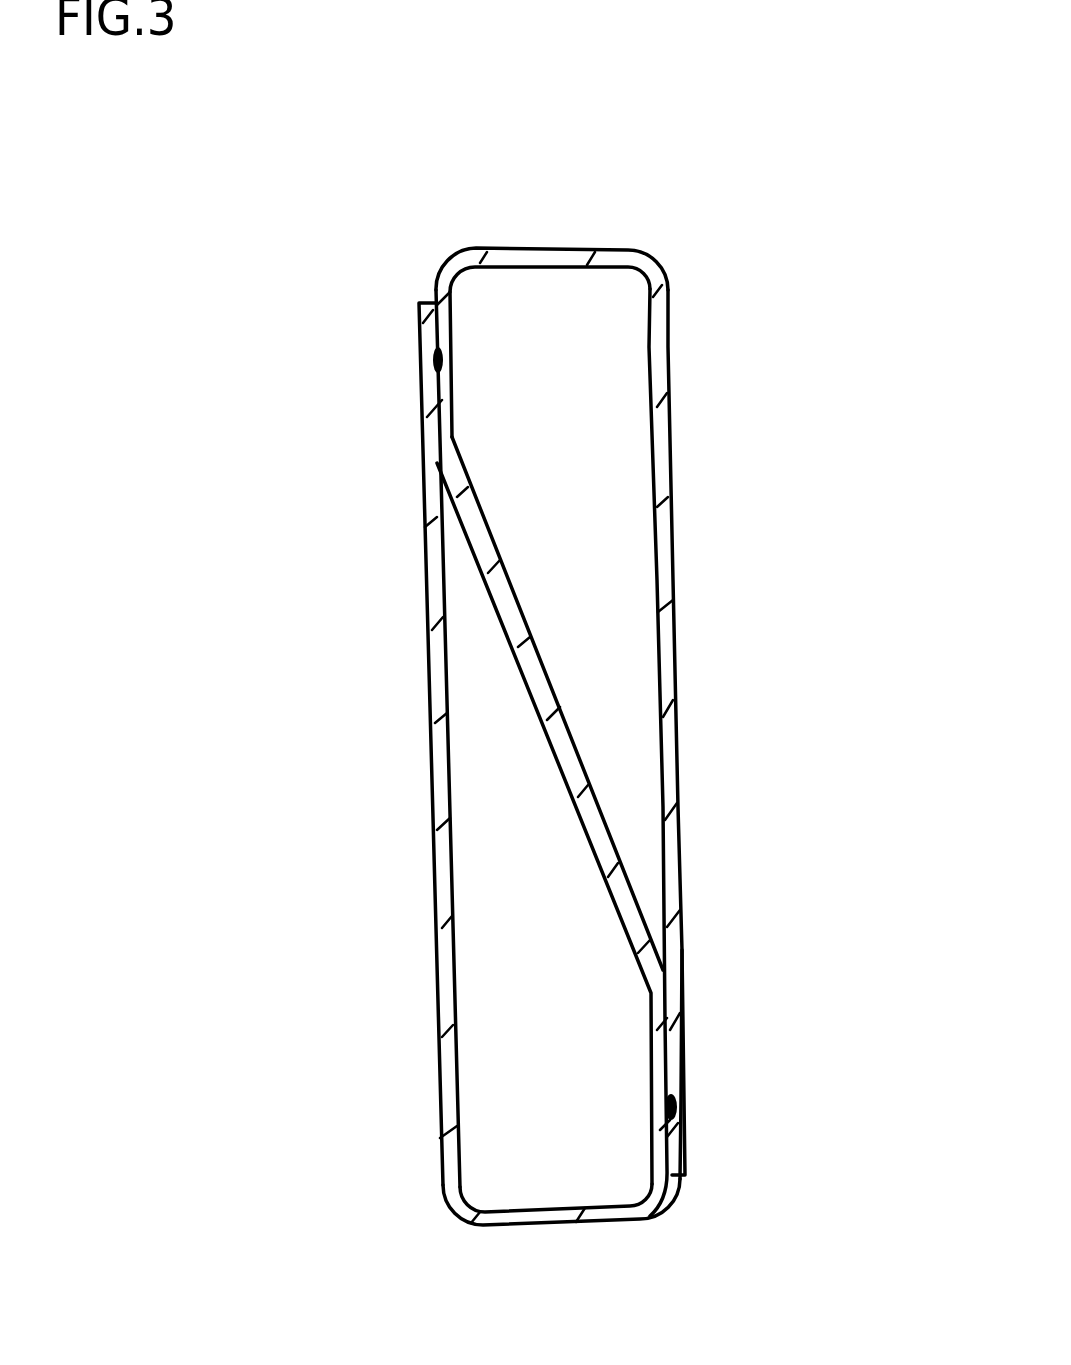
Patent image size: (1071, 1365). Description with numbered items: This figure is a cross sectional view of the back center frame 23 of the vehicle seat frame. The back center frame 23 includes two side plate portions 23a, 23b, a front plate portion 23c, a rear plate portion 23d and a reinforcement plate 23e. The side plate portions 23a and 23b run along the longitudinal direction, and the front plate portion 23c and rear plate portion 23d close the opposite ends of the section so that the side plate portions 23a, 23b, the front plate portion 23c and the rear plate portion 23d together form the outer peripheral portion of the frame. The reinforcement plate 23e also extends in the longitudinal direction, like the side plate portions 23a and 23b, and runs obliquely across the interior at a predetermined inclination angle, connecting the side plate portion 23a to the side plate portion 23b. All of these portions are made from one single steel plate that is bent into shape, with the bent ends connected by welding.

The back center frame 23 is at (738, 423).
The side plate portion 23a is at (440, 768).
The side plate portion 23b is at (675, 762).
The front plate portion 23c is at (560, 1216).
The rear plate portion 23d is at (553, 248).
The reinforcement plate 23e is at (563, 737).